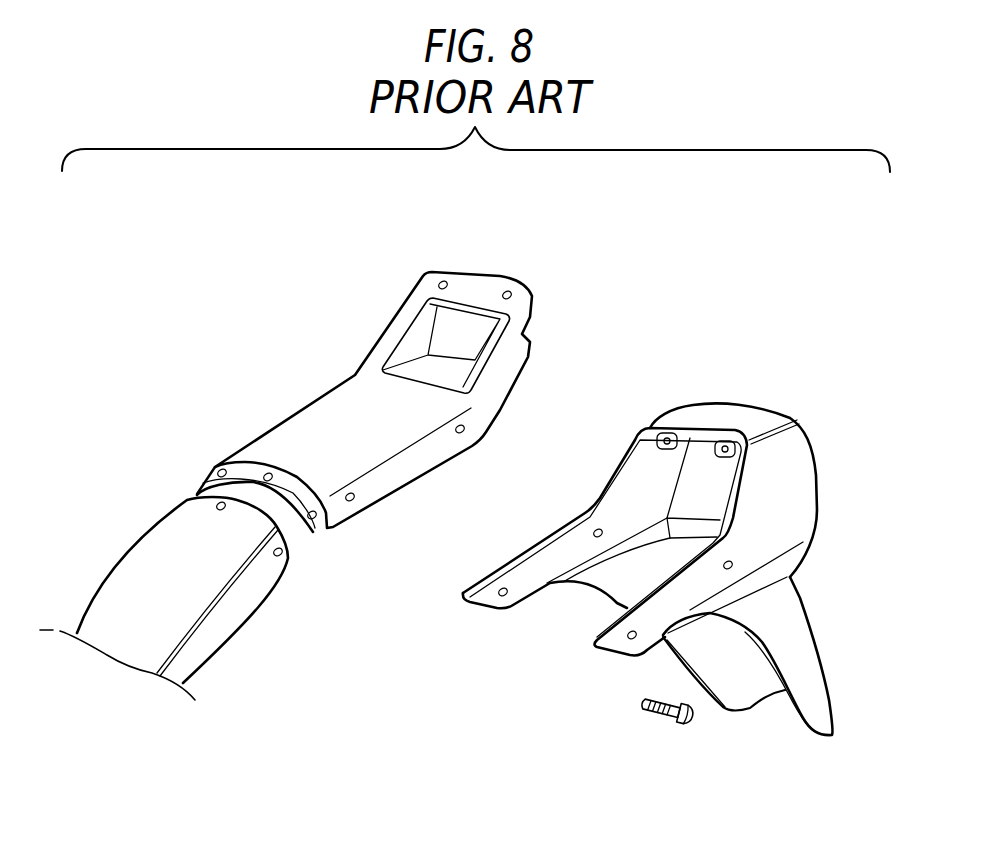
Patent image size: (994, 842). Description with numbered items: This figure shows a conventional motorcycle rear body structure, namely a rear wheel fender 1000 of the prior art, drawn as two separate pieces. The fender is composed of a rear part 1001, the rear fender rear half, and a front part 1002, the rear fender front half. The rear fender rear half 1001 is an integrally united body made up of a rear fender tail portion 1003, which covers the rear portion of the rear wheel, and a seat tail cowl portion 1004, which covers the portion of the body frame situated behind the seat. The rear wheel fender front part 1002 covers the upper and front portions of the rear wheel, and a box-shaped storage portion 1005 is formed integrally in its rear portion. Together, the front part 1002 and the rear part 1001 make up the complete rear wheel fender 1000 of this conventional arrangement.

The rear wheel fender 1000 is at (725, 288).
The rear part of rear wheel fender 1001 is at (790, 388).
The front part of rear wheel fender 1002 is at (277, 413).
The rear fender tail portion 1003 is at (788, 618).
The seat tail cowl portion 1004 is at (778, 458).
The box-shaped storage portion 1005 is at (460, 332).